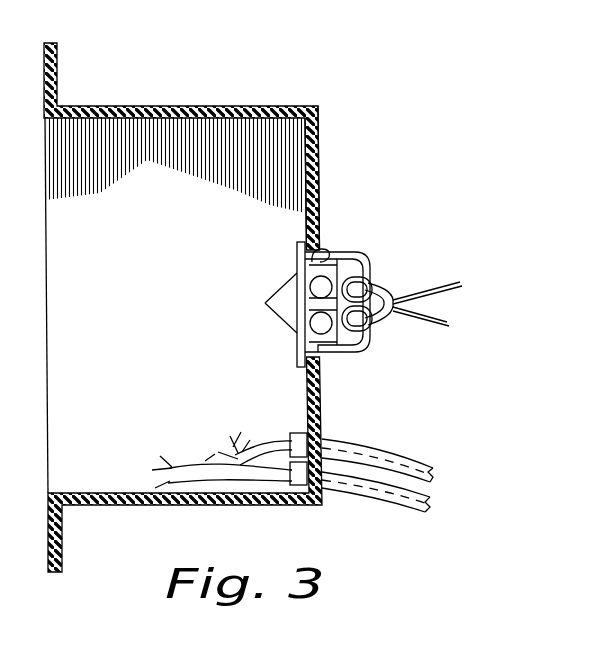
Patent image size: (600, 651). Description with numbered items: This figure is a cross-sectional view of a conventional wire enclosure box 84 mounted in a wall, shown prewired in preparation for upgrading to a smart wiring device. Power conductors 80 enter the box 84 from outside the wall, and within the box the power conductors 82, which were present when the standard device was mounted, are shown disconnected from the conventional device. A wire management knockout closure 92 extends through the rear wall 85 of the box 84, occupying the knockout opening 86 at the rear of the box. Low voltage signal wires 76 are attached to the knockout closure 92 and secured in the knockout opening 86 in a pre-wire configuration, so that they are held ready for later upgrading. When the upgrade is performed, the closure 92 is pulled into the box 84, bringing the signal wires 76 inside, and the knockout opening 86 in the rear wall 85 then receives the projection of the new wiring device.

The wire enclosure box 84 is at (205, 290).
The rear wall 85 is at (318, 160).
The knockout opening 86 is at (327, 260).
The signal wires 76 is at (443, 268).
The wire management knockout closure 92 is at (272, 329).
The power conductors 82 is at (243, 437).
The power conductors 80 is at (399, 442).